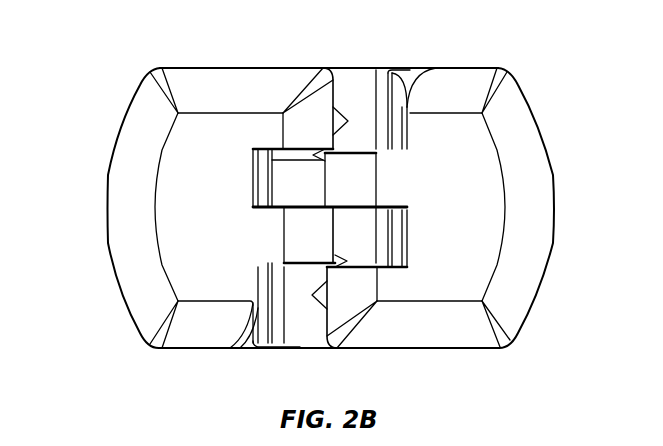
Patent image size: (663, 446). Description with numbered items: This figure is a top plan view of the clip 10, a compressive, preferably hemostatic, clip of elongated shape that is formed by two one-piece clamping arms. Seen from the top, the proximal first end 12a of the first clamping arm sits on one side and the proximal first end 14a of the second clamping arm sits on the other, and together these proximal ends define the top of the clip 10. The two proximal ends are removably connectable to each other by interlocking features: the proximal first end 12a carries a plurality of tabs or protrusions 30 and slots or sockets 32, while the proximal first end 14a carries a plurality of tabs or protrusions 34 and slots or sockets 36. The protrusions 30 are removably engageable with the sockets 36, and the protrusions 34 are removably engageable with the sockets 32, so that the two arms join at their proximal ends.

The clip 10 is at (182, 38).
The proximal first end of the first clamping arm 12a is at (127, 140).
The proximal first end of the second clamping arm 14a is at (525, 127).
The protrusions 30 is at (312, 118).
The sockets 32 is at (290, 183).
The protrusions 34 is at (363, 178).
The sockets 36 is at (375, 97).